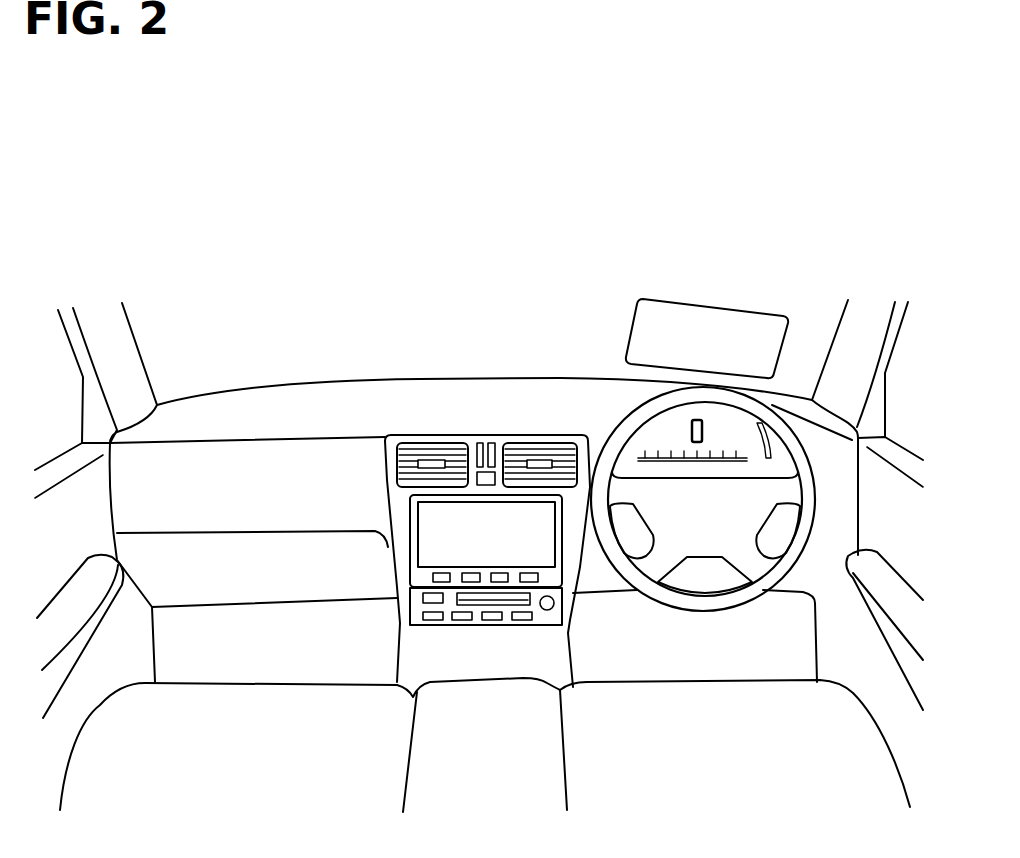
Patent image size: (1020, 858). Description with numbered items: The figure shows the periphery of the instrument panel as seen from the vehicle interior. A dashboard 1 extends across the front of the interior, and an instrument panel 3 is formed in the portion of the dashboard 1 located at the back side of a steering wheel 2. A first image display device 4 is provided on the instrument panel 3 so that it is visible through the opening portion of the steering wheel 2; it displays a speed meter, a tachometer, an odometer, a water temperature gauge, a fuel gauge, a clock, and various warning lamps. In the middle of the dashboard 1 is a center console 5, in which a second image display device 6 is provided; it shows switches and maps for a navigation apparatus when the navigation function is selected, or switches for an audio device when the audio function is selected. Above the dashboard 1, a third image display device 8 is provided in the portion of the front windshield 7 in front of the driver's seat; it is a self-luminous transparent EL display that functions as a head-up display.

The dashboard 1 is at (330, 403).
The steering wheel 2 is at (817, 493).
The instrument panel 3 is at (597, 433).
The first image display device 4 is at (663, 432).
The center console 5 is at (463, 433).
The second image display device 6 is at (430, 545).
The front windshield 7 is at (808, 328).
The third image display device 8 is at (713, 302).